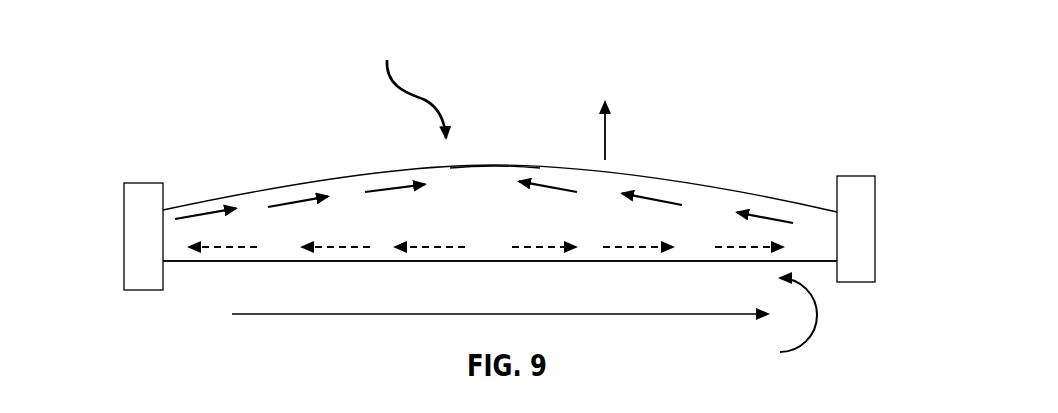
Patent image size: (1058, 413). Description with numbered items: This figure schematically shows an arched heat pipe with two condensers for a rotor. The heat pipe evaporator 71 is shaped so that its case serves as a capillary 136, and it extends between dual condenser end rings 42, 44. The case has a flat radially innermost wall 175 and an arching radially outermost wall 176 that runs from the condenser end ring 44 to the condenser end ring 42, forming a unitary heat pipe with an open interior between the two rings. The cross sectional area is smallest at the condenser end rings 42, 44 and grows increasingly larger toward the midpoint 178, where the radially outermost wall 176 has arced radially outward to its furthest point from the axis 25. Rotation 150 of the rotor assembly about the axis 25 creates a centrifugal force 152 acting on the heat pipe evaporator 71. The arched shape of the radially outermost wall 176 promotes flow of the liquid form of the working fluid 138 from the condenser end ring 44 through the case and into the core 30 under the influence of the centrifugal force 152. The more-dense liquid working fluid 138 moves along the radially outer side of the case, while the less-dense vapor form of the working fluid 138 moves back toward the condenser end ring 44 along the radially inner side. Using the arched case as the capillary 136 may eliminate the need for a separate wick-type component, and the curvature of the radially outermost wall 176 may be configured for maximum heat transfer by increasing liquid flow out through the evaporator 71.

The heat pipe evaporator 71 is at (409, 87).
The radially outermost wall 176 is at (248, 194).
The midpoint 178 is at (500, 163).
The centrifugal force 152 is at (606, 137).
The capillary 136 is at (767, 195).
The condenser end ring 44 is at (124, 212).
The condenser end ring 42 is at (875, 201).
The working fluid 138 is at (290, 206).
The core 30 is at (344, 297).
The radially innermost wall 175 is at (480, 262).
The axis 25 is at (486, 315).
The rotation 150 is at (816, 318).